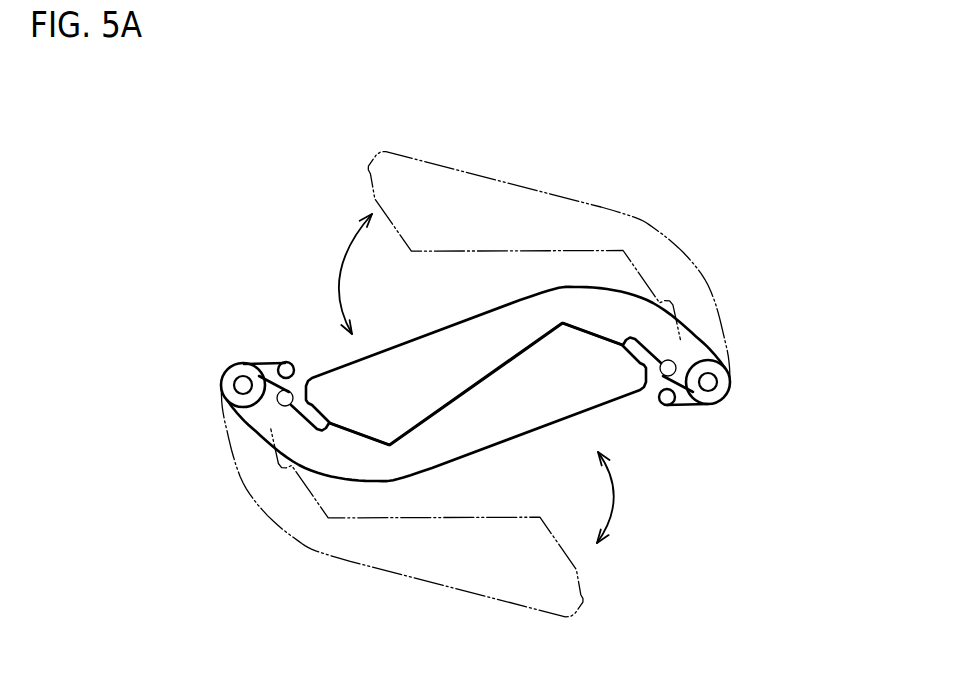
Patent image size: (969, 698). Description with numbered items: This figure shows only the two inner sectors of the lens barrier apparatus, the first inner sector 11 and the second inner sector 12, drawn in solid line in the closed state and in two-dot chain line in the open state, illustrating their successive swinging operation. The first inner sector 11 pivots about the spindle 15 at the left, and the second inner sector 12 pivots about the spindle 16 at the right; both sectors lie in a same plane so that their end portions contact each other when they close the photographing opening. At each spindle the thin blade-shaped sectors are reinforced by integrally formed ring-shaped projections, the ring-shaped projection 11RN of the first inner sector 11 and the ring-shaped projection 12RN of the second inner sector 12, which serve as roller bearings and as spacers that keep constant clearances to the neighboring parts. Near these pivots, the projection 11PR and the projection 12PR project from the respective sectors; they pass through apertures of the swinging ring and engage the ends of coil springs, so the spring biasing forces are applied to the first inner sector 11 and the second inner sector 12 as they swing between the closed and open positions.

The first inner sector 11 is at (527, 407).
The second inner sector 12 is at (560, 200).
The spindle 15 is at (242, 387).
The spindle 16 is at (723, 397).
The ring-shaped projection 11RN is at (237, 363).
The projection 11PR is at (288, 368).
The ring-shaped projection 12RN is at (710, 383).
The projection 12PR is at (668, 405).